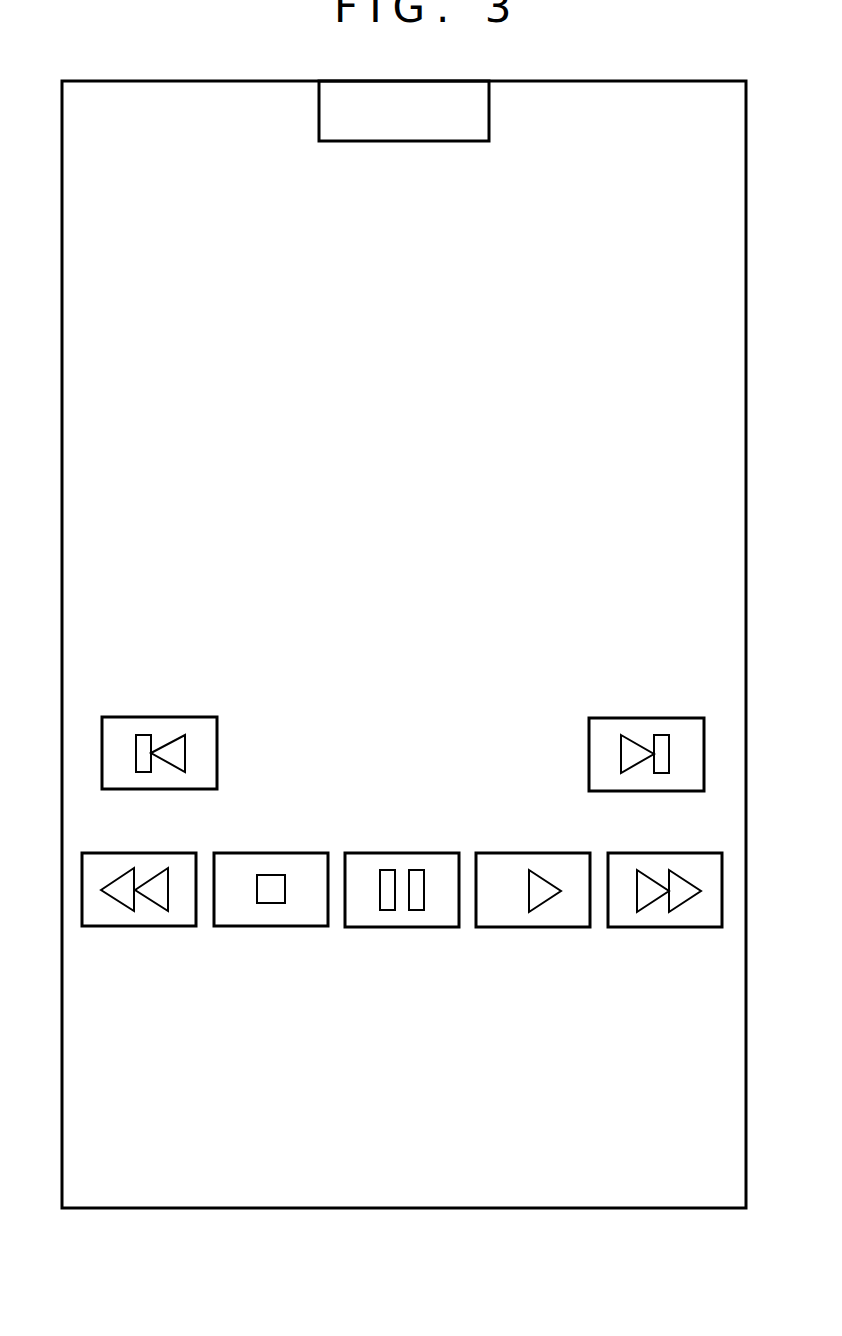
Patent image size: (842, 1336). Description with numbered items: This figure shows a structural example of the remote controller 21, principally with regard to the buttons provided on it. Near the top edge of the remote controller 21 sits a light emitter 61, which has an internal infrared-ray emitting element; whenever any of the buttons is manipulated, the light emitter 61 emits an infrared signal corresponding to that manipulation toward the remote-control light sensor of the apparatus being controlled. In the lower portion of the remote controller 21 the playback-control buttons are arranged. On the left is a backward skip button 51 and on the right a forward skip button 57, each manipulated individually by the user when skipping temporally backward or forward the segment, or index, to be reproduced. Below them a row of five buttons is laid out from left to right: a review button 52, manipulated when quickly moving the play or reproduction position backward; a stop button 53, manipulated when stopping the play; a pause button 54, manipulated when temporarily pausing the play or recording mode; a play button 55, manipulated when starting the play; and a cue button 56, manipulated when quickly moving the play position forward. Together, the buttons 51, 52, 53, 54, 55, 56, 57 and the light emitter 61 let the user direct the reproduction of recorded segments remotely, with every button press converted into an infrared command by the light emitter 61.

The remote controller 21 is at (598, 1210).
The light emitter 61 is at (455, 143).
The backward skip button 51 is at (143, 713).
The review button 52 is at (129, 929).
The stop button 53 is at (265, 929).
The pause button 54 is at (381, 929).
The play button 55 is at (513, 929).
The cue button 56 is at (659, 929).
The forward skip button 57 is at (620, 715).